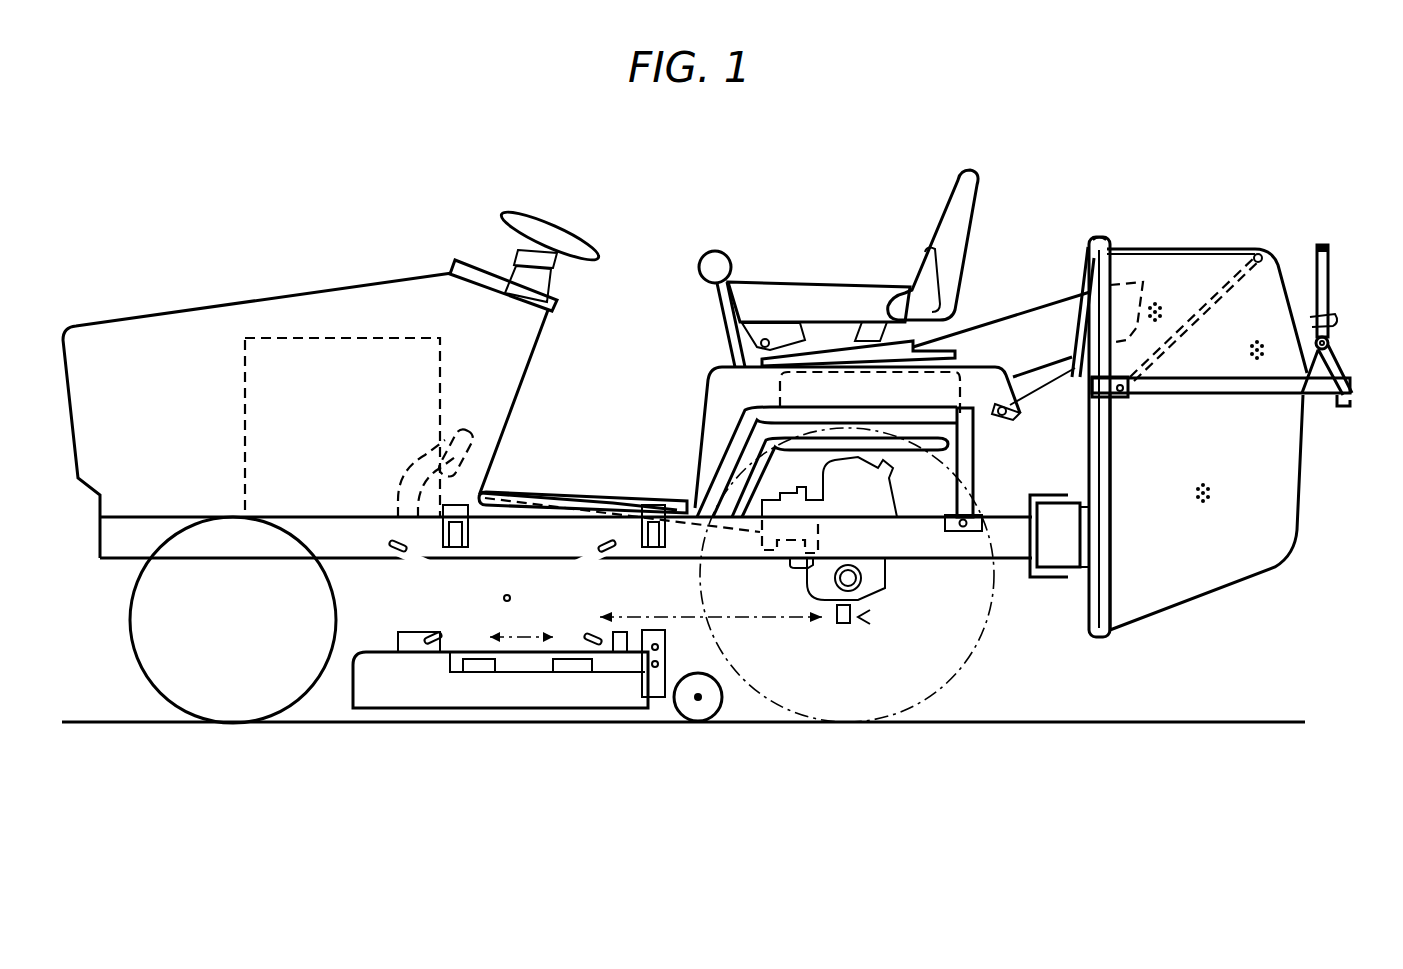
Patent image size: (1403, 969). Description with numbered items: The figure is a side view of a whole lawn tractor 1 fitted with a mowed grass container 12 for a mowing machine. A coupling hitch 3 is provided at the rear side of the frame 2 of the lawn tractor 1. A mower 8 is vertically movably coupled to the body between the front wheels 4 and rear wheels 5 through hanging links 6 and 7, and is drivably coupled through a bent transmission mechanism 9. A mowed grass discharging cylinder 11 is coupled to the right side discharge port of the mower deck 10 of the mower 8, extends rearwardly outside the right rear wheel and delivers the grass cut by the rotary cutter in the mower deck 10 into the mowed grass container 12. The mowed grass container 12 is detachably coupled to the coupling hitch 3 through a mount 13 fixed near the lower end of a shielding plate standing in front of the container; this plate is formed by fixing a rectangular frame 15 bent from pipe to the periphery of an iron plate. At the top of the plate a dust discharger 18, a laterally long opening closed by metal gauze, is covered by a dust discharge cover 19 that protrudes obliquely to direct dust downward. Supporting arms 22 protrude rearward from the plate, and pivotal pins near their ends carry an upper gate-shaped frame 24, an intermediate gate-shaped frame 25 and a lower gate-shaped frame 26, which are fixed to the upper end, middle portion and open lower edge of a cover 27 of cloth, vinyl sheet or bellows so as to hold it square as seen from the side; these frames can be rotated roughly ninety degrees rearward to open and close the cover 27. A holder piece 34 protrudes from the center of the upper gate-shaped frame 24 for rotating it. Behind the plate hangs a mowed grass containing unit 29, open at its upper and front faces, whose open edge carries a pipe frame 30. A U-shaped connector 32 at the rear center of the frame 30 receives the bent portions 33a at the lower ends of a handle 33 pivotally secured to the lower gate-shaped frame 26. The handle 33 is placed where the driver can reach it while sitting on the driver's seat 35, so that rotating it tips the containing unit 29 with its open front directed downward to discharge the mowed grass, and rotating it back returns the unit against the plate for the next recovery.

The lawn tractor 1 is at (590, 486).
The frame 2 is at (603, 530).
The coupling hitch 3 is at (1045, 495).
The front wheels 4 is at (128, 601).
The rear wheels 5 is at (955, 670).
The hanging links 6 is at (430, 570).
The hanging links 7 is at (558, 575).
The mower 8 is at (340, 697).
The bent transmission mechanism 9 is at (782, 618).
The mower deck 10 is at (470, 700).
The mowed grass discharging cylinder 11 is at (996, 325).
The mowed grass container 12 is at (1280, 247).
The mount 13 is at (1080, 577).
The rectangular frame 15 is at (1090, 462).
The dust discharger 18 is at (1078, 387).
The dust discharge cover 19 is at (1075, 378).
The supporting arms 22 is at (1115, 398).
The upper gate-shaped frame 24 is at (1097, 266).
The intermediate gate-shaped frame 25 is at (1198, 300).
The lower gate-shaped frame 26 is at (1200, 396).
The cover 27 is at (1230, 250).
The mowed grass containing unit 29 is at (1288, 627).
The frame 30 is at (1248, 396).
The U-shaped connector 32 is at (1346, 378).
The handle 33 is at (1328, 261).
The bent portions 33a is at (1346, 408).
The holder piece 34 is at (1100, 236).
The driver's seat 35 is at (834, 278).